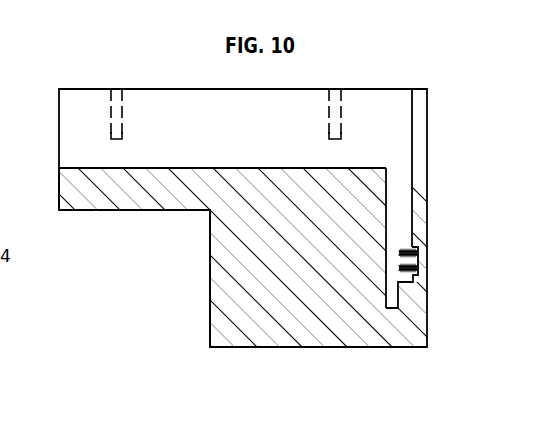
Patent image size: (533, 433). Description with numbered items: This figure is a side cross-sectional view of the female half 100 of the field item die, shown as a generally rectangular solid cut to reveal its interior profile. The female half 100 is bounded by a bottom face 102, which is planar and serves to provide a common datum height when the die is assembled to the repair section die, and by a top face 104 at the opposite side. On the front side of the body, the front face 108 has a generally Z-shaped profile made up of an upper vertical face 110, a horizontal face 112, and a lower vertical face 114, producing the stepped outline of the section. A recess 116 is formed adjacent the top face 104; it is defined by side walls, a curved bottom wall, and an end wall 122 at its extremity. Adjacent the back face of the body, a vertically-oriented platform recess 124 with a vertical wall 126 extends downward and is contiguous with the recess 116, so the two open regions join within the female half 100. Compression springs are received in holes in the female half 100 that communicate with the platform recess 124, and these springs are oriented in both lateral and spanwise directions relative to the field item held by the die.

The female half 100 is at (377, 380).
The bottom face 102 is at (288, 344).
The top face 104 is at (157, 88).
The front face 108 is at (123, 252).
The upper vertical face 110 is at (59, 169).
The horizontal face 112 is at (87, 211).
The lower vertical face 114 is at (210, 298).
The recess 116 is at (296, 93).
The end wall 122 is at (412, 110).
The platform recess 124 is at (390, 152).
The vertical wall 126 is at (386, 182).